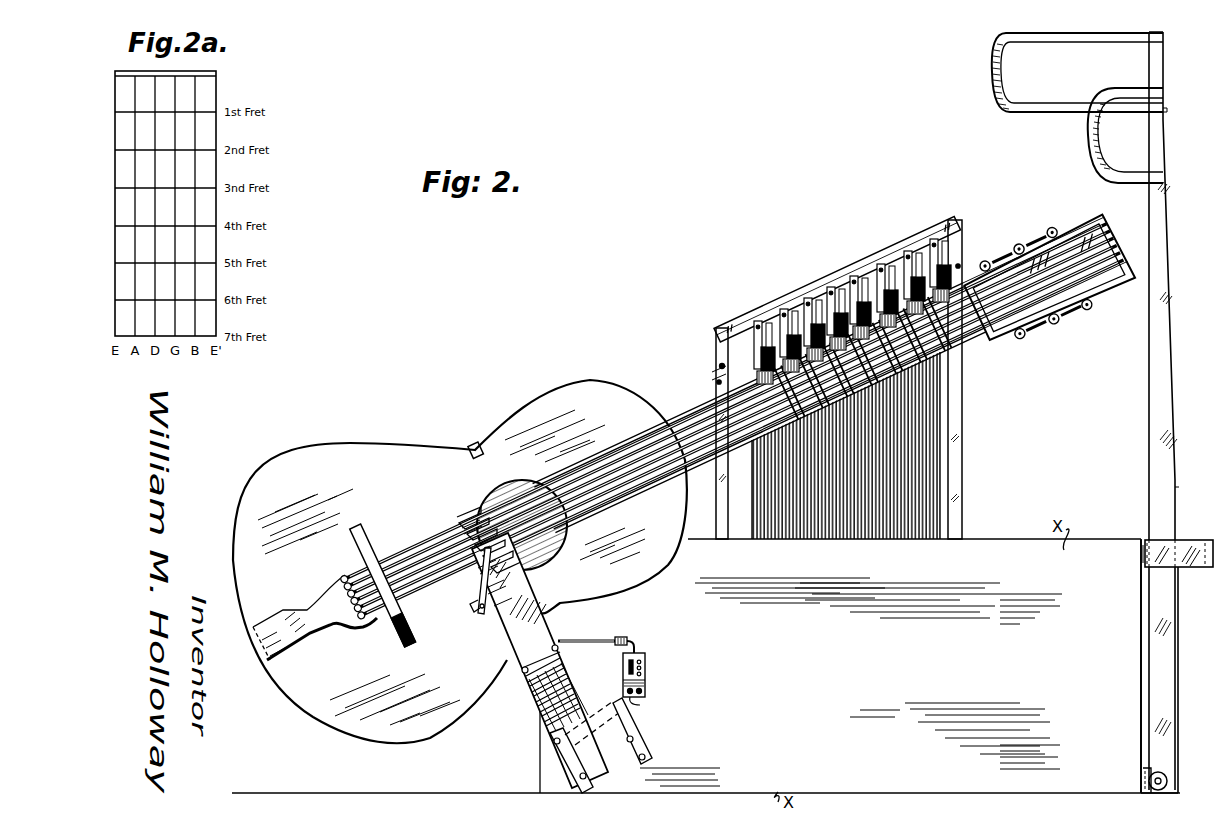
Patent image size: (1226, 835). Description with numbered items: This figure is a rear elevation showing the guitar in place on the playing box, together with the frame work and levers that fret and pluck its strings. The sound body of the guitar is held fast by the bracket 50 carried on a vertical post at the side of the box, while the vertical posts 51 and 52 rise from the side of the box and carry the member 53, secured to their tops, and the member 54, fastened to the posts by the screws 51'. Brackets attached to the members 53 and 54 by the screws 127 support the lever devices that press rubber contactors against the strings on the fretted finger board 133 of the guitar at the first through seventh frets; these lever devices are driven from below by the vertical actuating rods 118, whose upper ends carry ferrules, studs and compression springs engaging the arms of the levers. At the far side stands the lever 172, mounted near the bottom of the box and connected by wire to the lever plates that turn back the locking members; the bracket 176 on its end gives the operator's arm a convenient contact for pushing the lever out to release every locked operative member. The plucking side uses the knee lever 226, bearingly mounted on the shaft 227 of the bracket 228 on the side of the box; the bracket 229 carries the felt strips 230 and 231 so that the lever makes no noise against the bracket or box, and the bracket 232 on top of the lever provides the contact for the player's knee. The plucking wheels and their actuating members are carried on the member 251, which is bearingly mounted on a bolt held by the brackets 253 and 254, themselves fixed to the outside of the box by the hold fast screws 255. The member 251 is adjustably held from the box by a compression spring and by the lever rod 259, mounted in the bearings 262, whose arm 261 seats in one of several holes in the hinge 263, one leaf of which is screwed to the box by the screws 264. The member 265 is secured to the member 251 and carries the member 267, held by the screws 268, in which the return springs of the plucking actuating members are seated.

The bracket 50 is at (474, 450).
The vertical post 51 is at (976, 379).
The screw 51' is at (847, 315).
The vertical post 52 is at (718, 504).
The member 53 is at (727, 326).
The member 54 is at (717, 364).
The vertical actuating rod 118 is at (880, 540).
The screw 127 is at (820, 292).
The fretted finger board 133 is at (963, 338).
The lever 172 is at (1163, 68).
The bracket 176 is at (1037, 44).
The lever 226 is at (1164, 487).
The shaft 227 is at (1167, 781).
The bracket 228 is at (1160, 770).
The bracket 229 is at (1183, 568).
The felt strip 230 is at (1202, 546).
The felt strip 231 is at (1144, 542).
The bracket 232 is at (1089, 144).
The member 251 is at (580, 671).
The bracket 253 is at (562, 756).
The bracket 254 is at (632, 724).
The hold fast screw 255 is at (554, 741).
The lever rod 259 is at (576, 640).
The lever arm 261 is at (636, 652).
The bearing 262 is at (630, 640).
The hinge 263 is at (645, 682).
The screw 264 is at (640, 698).
The member 265 is at (504, 655).
The member 267 is at (477, 602).
The screw 268 is at (480, 618).